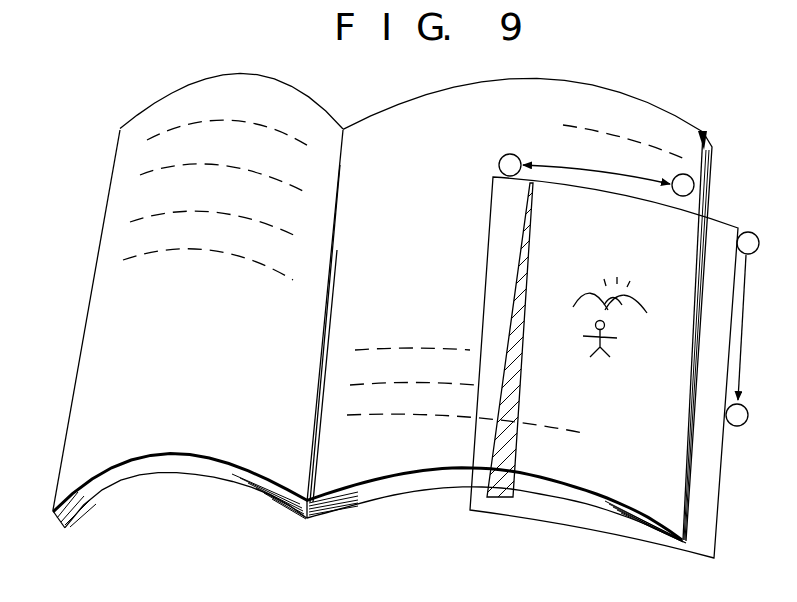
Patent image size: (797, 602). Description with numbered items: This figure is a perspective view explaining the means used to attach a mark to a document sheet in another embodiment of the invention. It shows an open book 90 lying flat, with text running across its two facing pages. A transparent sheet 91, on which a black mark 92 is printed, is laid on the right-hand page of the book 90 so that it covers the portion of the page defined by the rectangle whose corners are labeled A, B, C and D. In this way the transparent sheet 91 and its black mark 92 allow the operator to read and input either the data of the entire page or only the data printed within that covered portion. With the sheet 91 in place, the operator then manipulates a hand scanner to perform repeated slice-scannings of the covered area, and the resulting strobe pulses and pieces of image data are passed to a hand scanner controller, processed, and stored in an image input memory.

The book (document) with Japanese text 90 is at (302, 97).
The transparent sheet 91 is at (694, 544).
The black mark 92 is at (498, 500).